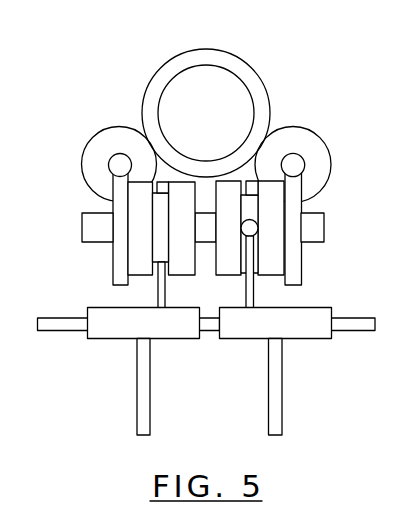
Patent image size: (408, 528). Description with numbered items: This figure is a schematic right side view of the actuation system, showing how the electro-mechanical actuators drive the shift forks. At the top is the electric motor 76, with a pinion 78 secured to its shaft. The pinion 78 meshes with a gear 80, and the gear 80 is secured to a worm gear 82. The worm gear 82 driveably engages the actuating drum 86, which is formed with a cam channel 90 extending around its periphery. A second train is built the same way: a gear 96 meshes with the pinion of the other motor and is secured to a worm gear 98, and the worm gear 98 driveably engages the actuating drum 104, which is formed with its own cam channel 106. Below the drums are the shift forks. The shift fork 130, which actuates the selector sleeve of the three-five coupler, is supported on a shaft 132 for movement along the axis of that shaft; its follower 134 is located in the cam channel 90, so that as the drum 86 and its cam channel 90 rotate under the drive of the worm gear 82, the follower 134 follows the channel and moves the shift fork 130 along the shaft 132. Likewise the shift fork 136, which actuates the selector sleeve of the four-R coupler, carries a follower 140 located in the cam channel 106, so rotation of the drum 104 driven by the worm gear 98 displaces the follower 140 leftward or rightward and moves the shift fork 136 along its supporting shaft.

The electric motor 76 is at (222, 126).
The pinion 78 is at (266, 105).
The gear 80 is at (329, 168).
The worm gear 82 is at (295, 162).
The actuating drum 86 is at (274, 245).
The cam channel 90 is at (247, 210).
The gear 96 is at (111, 146).
The worm gear 98 is at (118, 167).
The actuating drum 104 is at (137, 213).
The cam channel 106 is at (152, 240).
The shift fork 130 is at (261, 333).
The shaft 132 is at (351, 327).
The follower 134 is at (254, 302).
The shift fork 136 is at (112, 337).
The follower 140 is at (157, 302).